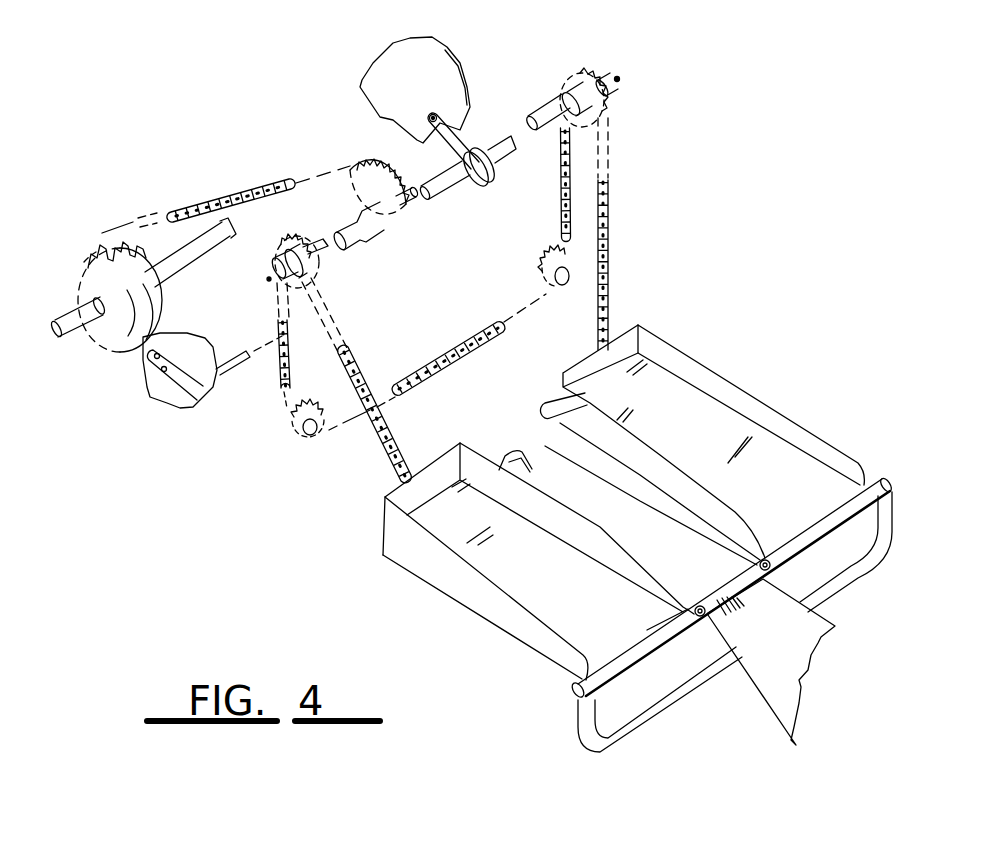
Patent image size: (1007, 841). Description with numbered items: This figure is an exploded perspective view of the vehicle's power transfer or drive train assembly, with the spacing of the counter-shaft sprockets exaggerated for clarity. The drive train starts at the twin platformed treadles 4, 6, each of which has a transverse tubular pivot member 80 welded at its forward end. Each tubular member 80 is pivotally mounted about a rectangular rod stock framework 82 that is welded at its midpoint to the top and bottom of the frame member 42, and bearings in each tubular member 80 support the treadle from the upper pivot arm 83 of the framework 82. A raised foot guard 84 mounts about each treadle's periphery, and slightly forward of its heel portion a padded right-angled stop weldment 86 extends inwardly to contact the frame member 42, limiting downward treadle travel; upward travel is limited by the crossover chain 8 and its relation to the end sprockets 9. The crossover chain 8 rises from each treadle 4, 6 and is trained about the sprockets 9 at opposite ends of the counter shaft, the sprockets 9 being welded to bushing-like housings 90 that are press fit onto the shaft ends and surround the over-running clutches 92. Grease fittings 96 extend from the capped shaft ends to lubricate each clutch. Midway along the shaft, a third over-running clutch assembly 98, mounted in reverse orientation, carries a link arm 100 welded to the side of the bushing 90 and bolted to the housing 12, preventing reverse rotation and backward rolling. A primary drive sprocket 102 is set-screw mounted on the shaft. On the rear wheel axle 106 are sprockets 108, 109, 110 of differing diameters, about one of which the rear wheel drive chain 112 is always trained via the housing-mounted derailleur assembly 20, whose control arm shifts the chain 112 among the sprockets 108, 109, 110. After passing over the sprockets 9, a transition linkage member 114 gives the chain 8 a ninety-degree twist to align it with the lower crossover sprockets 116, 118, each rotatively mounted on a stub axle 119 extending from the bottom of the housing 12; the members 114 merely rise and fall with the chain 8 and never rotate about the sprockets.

The treadle 4 is at (580, 602).
The treadle 6 is at (782, 486).
The crossover chain 8 is at (370, 375).
The end sprocket 9 is at (287, 242).
The housing 12 is at (410, 93).
The derailleur assembly 20 is at (148, 390).
The frame member 42 is at (791, 634).
The tubular pivot member 80 is at (652, 713).
The framework 82 is at (808, 532).
The upper pivot arm 83 is at (760, 562).
The foot guard 84 is at (477, 593).
The stop weldment 86 is at (543, 421).
The bushing-like housing 90 is at (310, 266).
The over-running clutch 92 is at (278, 268).
The grease fitting 96 is at (269, 279).
The third over-running clutch assembly 98 is at (487, 180).
The link arm 100 is at (467, 137).
The primary drive sprocket 102 is at (400, 250).
The axle 106 is at (50, 337).
The sprocket 108 is at (83, 268).
The sprocket 109 is at (95, 250).
The sprocket 110 is at (108, 245).
The rear wheel drive chain 112 is at (217, 197).
The transition linkage member 114 is at (560, 210).
The crossover sprocket 116 is at (290, 420).
The crossover sprocket 118 is at (540, 265).
The stub axle 119 is at (315, 435).